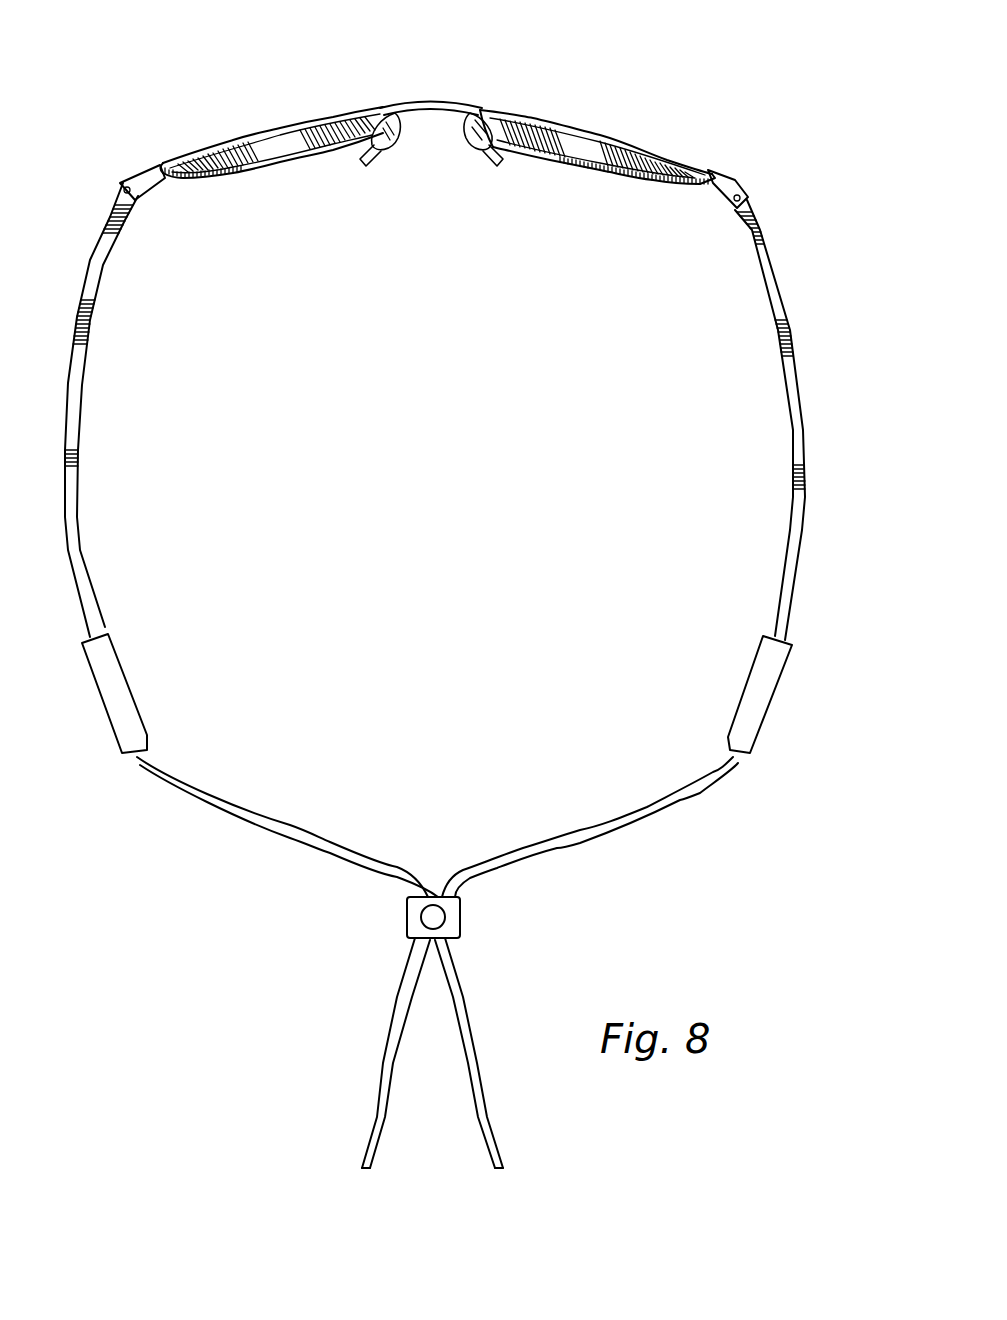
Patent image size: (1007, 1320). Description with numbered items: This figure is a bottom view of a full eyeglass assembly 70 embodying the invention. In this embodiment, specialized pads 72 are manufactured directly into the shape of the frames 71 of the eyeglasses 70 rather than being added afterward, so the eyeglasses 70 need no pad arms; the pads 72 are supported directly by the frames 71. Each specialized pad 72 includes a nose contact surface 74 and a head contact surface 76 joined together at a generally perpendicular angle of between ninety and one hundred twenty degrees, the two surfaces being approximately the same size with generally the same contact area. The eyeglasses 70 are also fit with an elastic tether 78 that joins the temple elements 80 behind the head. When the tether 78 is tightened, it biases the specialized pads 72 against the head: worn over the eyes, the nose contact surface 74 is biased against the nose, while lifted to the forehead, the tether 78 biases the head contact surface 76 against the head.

The eyeglass assembly 70 is at (590, 117).
The frames 71 is at (318, 115).
The specialized pads 72 is at (470, 140).
The nose contact surface 74 is at (450, 128).
The head contact surface 76 is at (483, 160).
The elastic tether 78 is at (632, 818).
The temple elements 80 is at (797, 440).